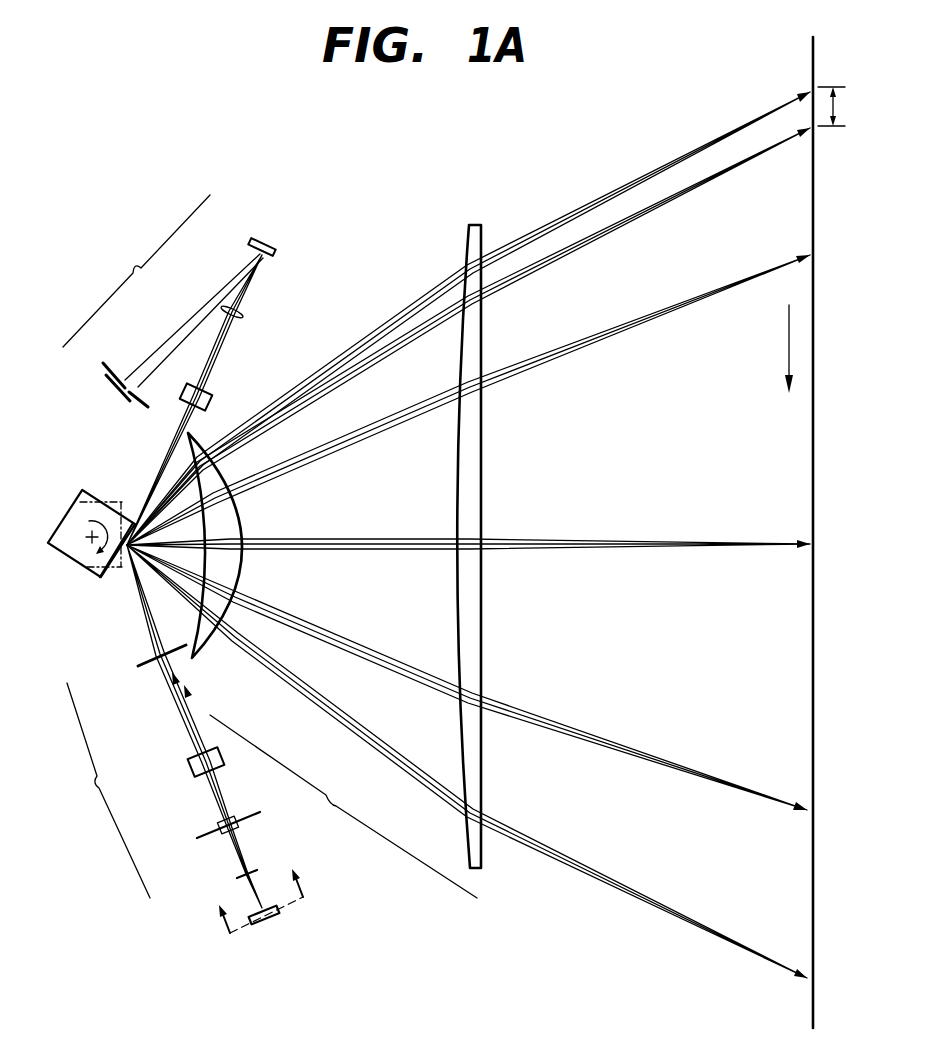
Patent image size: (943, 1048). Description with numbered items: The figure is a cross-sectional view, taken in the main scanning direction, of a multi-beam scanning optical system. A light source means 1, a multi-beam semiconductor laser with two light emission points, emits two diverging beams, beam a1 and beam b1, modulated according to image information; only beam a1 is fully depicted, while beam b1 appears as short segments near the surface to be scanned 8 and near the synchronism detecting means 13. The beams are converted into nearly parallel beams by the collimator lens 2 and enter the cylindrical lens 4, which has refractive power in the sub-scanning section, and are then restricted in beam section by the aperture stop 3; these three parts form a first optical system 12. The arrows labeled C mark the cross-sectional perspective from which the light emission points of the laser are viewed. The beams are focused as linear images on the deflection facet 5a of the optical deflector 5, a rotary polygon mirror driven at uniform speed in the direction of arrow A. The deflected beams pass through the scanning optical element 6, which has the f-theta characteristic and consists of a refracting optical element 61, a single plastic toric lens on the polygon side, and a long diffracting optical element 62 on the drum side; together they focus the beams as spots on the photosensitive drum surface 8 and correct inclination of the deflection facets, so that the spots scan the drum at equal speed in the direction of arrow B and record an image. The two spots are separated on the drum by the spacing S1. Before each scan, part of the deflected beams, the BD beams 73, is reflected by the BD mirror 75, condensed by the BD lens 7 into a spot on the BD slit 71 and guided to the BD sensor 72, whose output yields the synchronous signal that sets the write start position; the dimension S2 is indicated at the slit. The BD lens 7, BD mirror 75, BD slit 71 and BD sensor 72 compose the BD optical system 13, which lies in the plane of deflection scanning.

The light source means 1 is at (252, 922).
The collimator lens 2 is at (217, 824).
The aperture stop 3 is at (150, 663).
The cylindrical lens 4 is at (193, 772).
The optical deflector 5 is at (60, 556).
The deflection facet 5a is at (107, 573).
The scanning optical element 6 is at (343, 806).
The refracting optical element 61 is at (197, 658).
The long diffracting optical element 62 is at (470, 870).
The synchronism-detecting optical element 7 is at (210, 392).
The surface to be scanned 8 is at (815, 58).
The first optical system 12 is at (108, 790).
The synchronism detecting means 13 is at (136, 271).
The slit for detection of synchronism 71 is at (135, 373).
The photosensor 72 is at (120, 395).
The BD beams 73 is at (243, 317).
The return mirror for detection of synchronism 75 is at (272, 241).
The beam a1 is at (717, 138).
The beam b1 is at (723, 172).
The spacing between spots S1 is at (838, 105).
The beam spacing at slit S2 is at (145, 377).
The direction of arrow A is at (112, 515).
The direction of arrow B is at (788, 348).
The arrows labeled C is at (257, 889).